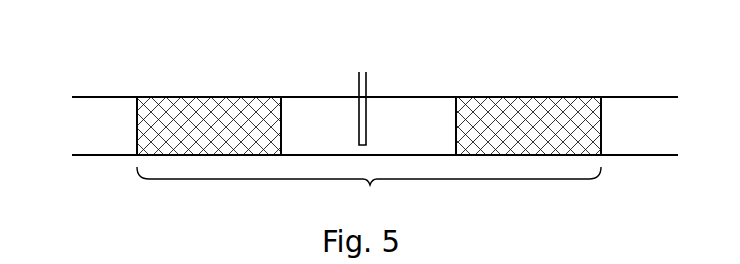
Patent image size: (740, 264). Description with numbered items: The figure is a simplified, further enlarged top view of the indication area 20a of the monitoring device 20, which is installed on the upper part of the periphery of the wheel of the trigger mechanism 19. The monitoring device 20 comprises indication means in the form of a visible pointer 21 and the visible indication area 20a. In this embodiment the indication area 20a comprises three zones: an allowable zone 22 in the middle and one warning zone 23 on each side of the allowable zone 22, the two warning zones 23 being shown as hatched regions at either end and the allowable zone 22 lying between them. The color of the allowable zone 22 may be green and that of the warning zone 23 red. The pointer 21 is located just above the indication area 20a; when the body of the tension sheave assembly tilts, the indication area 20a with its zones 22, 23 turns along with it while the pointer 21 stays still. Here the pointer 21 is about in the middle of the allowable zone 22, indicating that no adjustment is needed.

The trigger mechanism 19 is at (635, 97).
The monitoring device 20 is at (356, 131).
The indication area 20a is at (474, 200).
The pointer 21 is at (367, 88).
The allowable zone 22 is at (310, 107).
The warning zone 23 is at (197, 110).